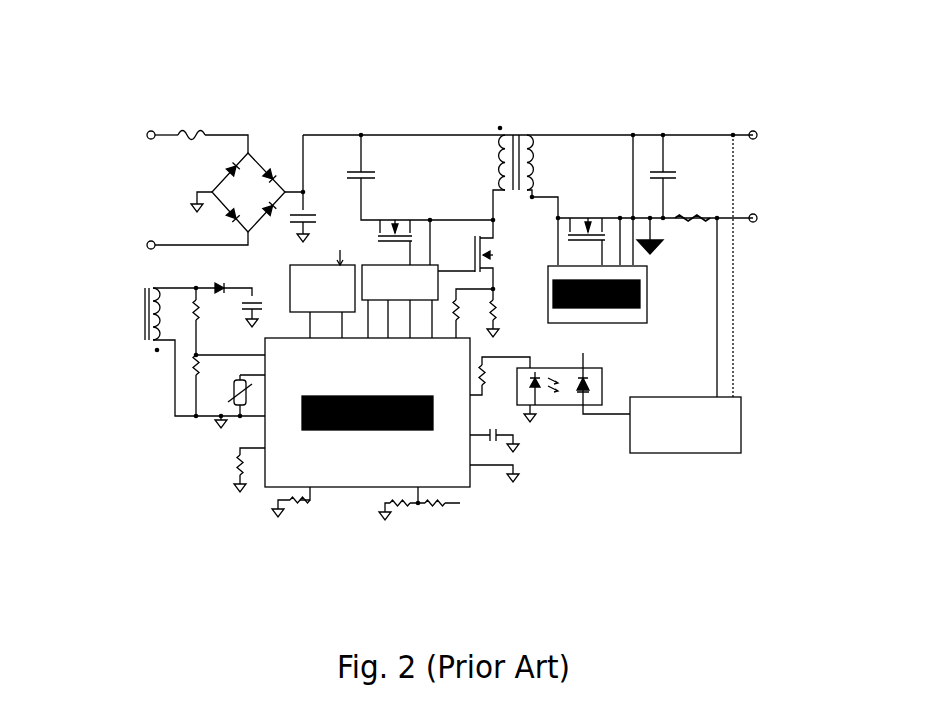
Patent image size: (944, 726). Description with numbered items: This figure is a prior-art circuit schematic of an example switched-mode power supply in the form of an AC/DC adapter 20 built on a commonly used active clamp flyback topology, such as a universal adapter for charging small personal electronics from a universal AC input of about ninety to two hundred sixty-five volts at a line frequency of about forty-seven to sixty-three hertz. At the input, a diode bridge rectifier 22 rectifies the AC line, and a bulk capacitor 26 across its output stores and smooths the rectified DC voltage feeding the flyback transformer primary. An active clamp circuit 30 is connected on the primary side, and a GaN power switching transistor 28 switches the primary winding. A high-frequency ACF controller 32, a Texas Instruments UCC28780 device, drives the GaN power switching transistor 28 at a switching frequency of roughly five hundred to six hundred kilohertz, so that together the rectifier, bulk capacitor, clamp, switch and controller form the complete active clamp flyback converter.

The AC/DC adapter 20 is at (70, 25).
The diode bridge rectifier 22 is at (239, 125).
The bulk capacitor 26 is at (312, 207).
The GaN power switching transistor 28 is at (497, 242).
The active clamp circuit 30 is at (395, 207).
The ACF controller 32 is at (348, 460).